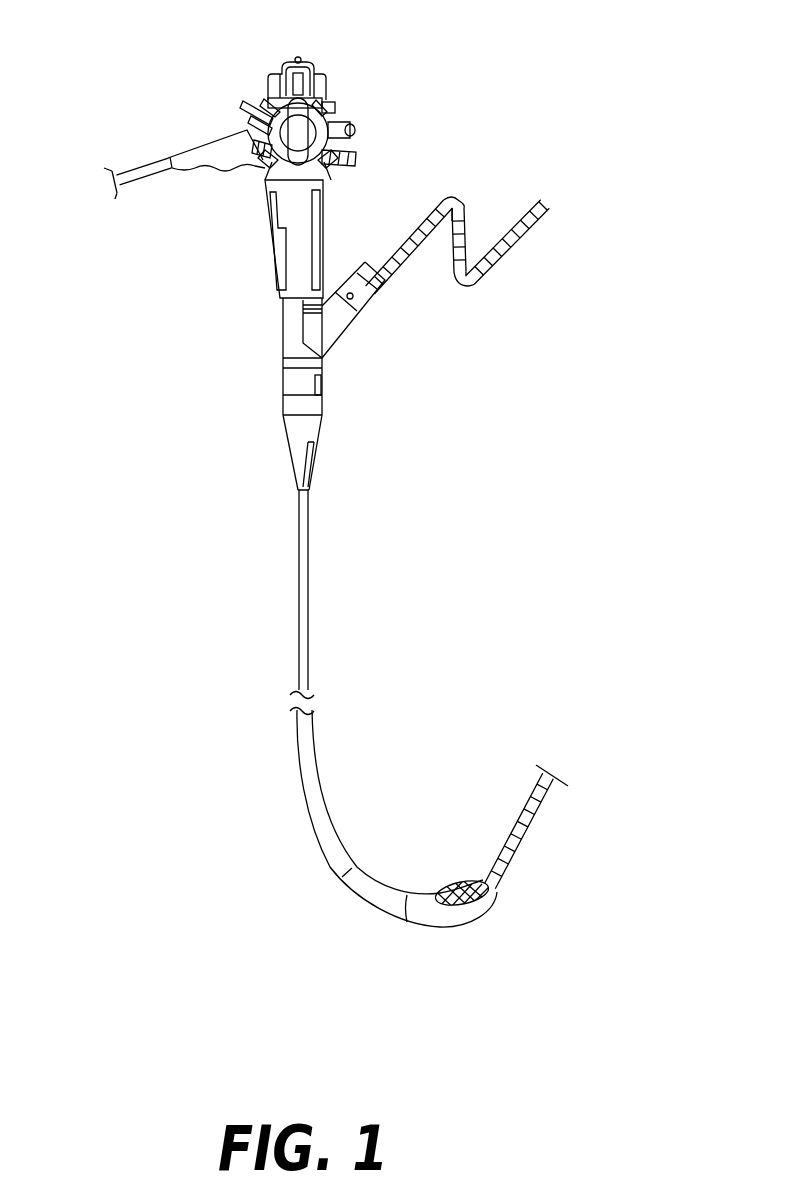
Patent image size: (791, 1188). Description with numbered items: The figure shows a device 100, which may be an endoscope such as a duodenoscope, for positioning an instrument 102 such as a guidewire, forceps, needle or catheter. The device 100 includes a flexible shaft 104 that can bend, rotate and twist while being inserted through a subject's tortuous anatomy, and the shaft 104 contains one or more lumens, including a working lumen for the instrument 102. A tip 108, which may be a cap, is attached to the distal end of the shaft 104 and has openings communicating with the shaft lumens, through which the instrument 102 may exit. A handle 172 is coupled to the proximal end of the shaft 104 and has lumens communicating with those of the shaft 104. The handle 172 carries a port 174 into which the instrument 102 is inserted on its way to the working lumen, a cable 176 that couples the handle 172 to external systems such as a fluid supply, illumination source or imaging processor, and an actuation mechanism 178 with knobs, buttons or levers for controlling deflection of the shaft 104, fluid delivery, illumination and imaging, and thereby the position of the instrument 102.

The device 100 is at (497, 83).
The instrument 102 is at (533, 781).
The shaft 104 is at (316, 796).
The tip 108 is at (503, 899).
The handle 172 is at (327, 241).
The port 174 is at (366, 302).
The cable 176 is at (138, 167).
The actuation mechanism 178 is at (336, 111).